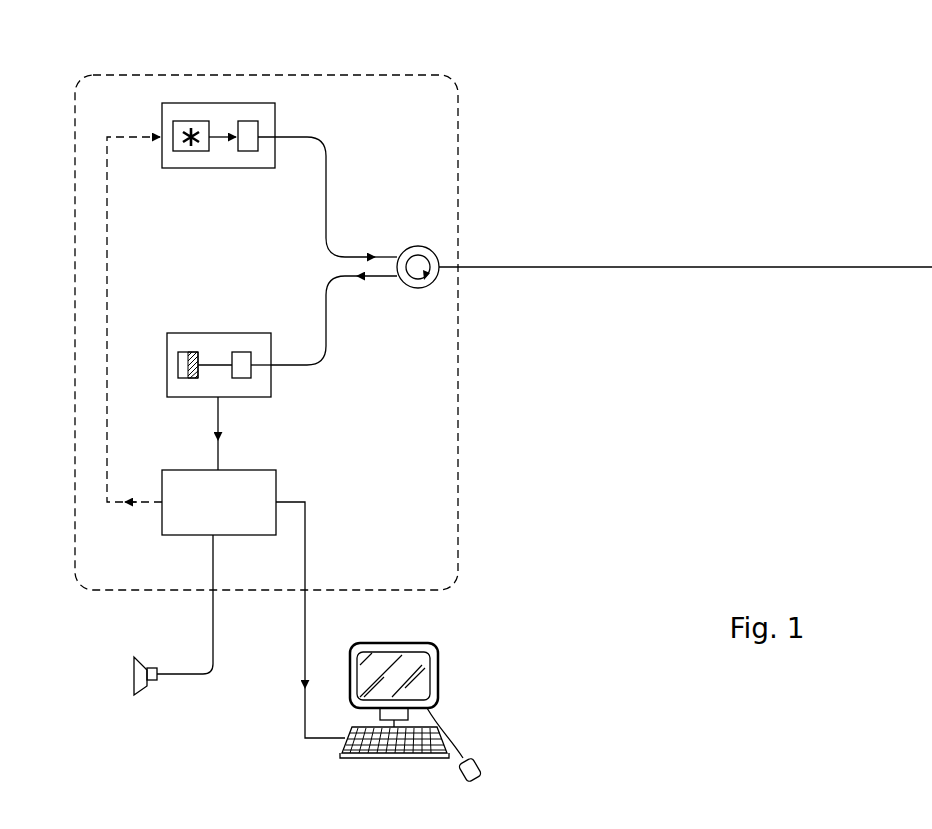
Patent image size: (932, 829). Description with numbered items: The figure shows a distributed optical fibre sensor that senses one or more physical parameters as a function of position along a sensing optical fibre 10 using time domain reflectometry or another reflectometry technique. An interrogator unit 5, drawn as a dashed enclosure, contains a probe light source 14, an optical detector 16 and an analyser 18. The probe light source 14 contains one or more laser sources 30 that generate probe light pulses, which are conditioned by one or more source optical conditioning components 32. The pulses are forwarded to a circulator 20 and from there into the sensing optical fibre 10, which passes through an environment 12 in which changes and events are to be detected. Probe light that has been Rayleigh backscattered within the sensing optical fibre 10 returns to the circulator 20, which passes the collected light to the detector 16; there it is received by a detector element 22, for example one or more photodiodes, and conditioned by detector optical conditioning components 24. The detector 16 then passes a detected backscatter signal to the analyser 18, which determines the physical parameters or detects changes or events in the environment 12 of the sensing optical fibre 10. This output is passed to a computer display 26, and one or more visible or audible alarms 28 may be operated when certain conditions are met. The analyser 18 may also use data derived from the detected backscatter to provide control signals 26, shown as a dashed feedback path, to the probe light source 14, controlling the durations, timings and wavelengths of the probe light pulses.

The interrogator unit 5 is at (93, 75).
The sensing optical fibre 10 is at (610, 267).
The environment 12 is at (760, 196).
The probe light source 14 is at (214, 127).
The optical detector 16 is at (204, 322).
The analyser 18 is at (276, 482).
The circulator 20 is at (417, 246).
The detector element 22 is at (192, 352).
The detector optical conditioning components 24 is at (242, 352).
The computer display 26 is at (107, 423).
The audible alarm 28 is at (150, 687).
The laser source 30 is at (190, 152).
The source optical conditioning components 32 is at (247, 152).